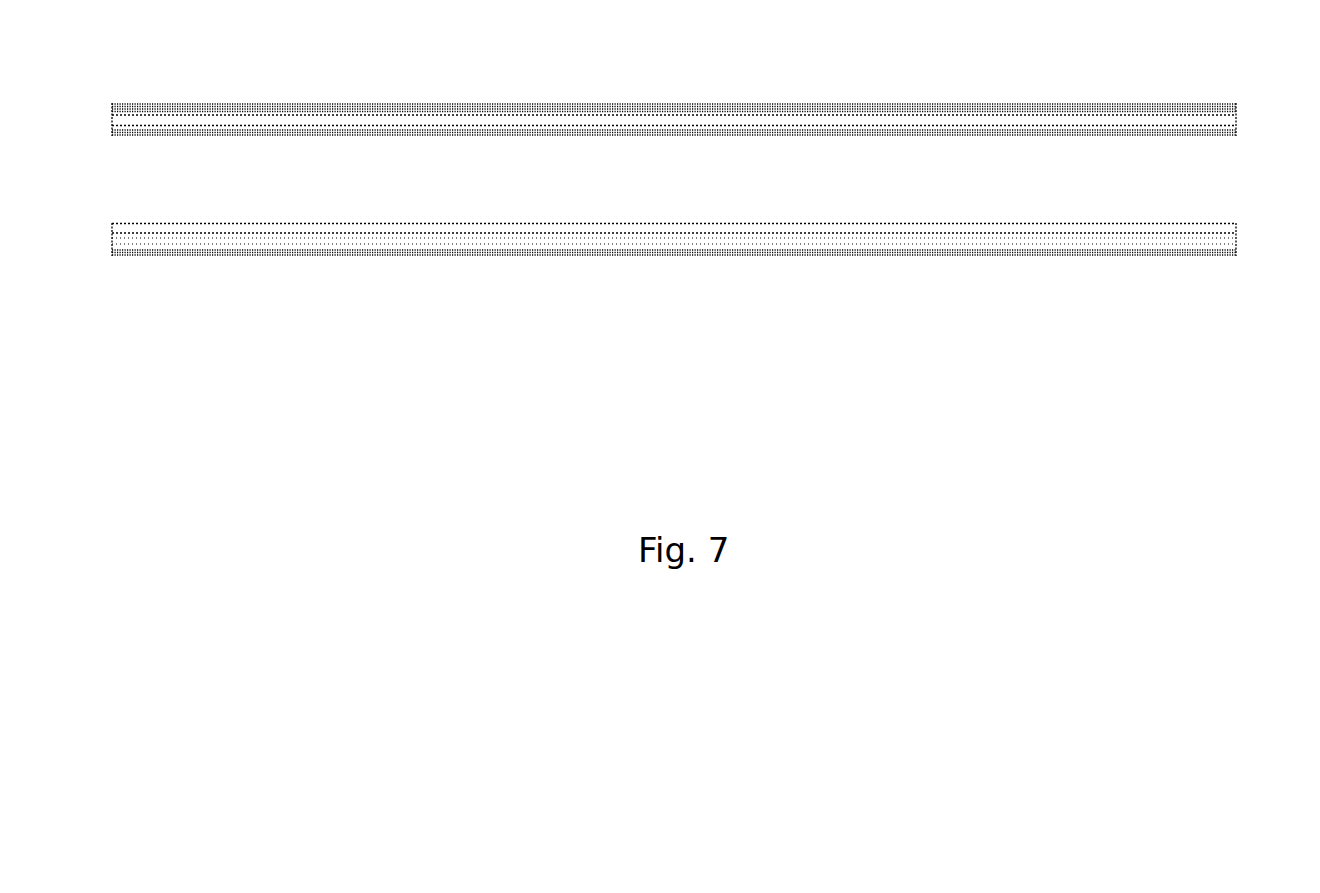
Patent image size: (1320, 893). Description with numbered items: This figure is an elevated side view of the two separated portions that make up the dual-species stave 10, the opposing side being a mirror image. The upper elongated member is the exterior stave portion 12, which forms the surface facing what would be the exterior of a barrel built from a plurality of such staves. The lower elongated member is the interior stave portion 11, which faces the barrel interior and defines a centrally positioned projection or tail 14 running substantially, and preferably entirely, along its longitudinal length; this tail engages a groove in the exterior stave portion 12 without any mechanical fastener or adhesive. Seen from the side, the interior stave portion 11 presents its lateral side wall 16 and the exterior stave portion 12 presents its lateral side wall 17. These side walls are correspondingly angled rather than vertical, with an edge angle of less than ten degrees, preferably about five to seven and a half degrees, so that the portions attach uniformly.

The dual-species stave 10 is at (90, 102).
The interior stave portion 11 is at (1021, 270).
The exterior stave portion 12 is at (1077, 92).
The tail 14 is at (752, 227).
The lateral side wall 16 is at (1238, 241).
The lateral side wall 17 is at (1240, 118).